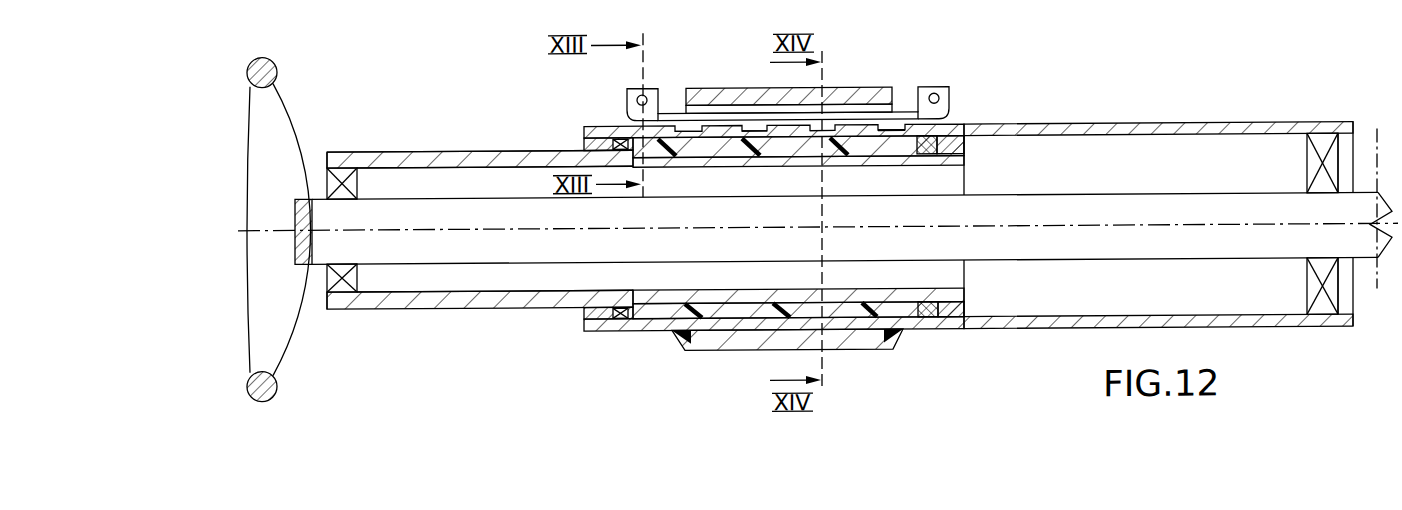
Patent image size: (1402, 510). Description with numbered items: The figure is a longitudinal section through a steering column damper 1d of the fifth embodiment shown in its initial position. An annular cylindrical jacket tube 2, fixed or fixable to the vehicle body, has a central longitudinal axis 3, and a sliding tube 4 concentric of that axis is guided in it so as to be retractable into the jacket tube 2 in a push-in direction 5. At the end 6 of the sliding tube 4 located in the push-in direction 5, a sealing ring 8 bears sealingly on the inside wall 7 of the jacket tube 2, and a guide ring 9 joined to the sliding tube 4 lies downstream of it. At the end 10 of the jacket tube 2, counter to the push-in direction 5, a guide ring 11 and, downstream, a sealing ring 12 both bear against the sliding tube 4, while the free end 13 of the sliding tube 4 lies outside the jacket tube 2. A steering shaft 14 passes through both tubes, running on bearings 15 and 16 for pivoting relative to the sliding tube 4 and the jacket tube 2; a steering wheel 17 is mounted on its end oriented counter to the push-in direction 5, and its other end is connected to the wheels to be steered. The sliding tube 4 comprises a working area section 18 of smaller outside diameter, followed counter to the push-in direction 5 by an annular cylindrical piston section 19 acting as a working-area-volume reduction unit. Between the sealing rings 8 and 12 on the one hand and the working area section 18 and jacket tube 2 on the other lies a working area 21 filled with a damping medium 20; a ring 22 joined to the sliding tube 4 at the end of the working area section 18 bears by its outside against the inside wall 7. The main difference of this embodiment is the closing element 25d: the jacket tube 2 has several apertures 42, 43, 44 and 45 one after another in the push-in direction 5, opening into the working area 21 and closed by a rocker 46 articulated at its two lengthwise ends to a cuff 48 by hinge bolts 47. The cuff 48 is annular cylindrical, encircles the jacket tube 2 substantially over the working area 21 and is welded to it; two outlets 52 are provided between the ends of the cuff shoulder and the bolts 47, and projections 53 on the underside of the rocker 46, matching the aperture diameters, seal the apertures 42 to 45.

The steering column damper 1d is at (966, 108).
The jacket tube 2 is at (1167, 126).
The central longitudinal axis 3 is at (1148, 230).
The sliding tube 4 is at (446, 150).
The push-in direction 5 is at (1012, 111).
The end of the sliding tube 6 is at (966, 183).
The inside wall 7 is at (1225, 141).
The sealing ring 8 is at (930, 152).
The guide ring 9 is at (958, 151).
The end of the jacket tube 10 is at (583, 126).
The guide ring 11 is at (590, 147).
The sealing ring 12 is at (620, 141).
The free end of the sliding tube 13 is at (337, 152).
The steering shaft 14 is at (437, 264).
The bearing 15 is at (342, 292).
The bearing 16 is at (1323, 310).
The steering wheel 17 is at (260, 401).
The working area section 18 is at (798, 165).
The piston section 19 is at (459, 163).
The damping medium 20 is at (753, 110).
The working area 21 is at (698, 150).
The ring 22 is at (650, 146).
The closing element 25d is at (758, 89).
The aperture 42 is at (688, 133).
The aperture 43 is at (748, 133).
The aperture 44 is at (832, 136).
The aperture 45 is at (888, 133).
The rocker 46 is at (647, 98).
The hinge bolt 47 is at (636, 92).
The cuff 48 is at (702, 342).
The outlet 52 is at (672, 112).
The projection 53 is at (890, 145).